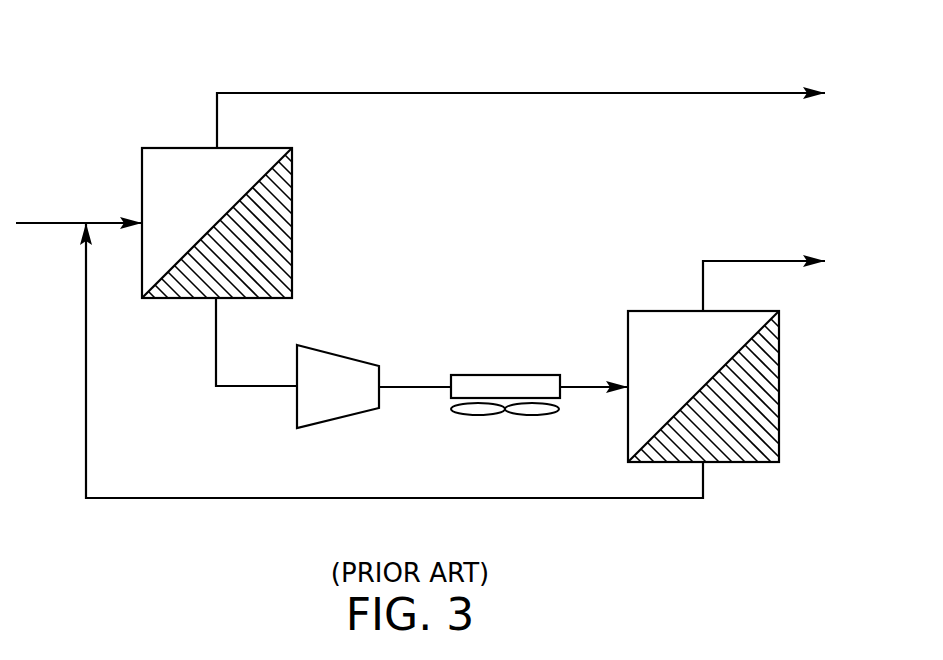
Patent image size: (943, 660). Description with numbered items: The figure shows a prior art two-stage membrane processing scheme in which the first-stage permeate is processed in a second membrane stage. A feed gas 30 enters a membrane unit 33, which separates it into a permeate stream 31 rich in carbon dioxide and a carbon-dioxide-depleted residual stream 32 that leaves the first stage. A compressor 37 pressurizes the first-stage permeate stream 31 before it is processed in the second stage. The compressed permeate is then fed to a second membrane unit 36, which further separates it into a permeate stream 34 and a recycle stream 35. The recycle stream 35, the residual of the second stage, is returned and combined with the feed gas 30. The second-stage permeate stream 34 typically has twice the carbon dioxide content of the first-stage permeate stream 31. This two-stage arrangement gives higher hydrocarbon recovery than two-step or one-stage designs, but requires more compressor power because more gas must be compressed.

The feed gas 30 is at (42, 222).
The permeate stream 31 is at (216, 341).
The residual stream 32 is at (743, 92).
The membrane unit 33 is at (217, 223).
The permeate stream 34 is at (743, 260).
The recycle stream 35 is at (478, 415).
The membrane unit 36 is at (703, 386).
The compressor 37 is at (338, 386).